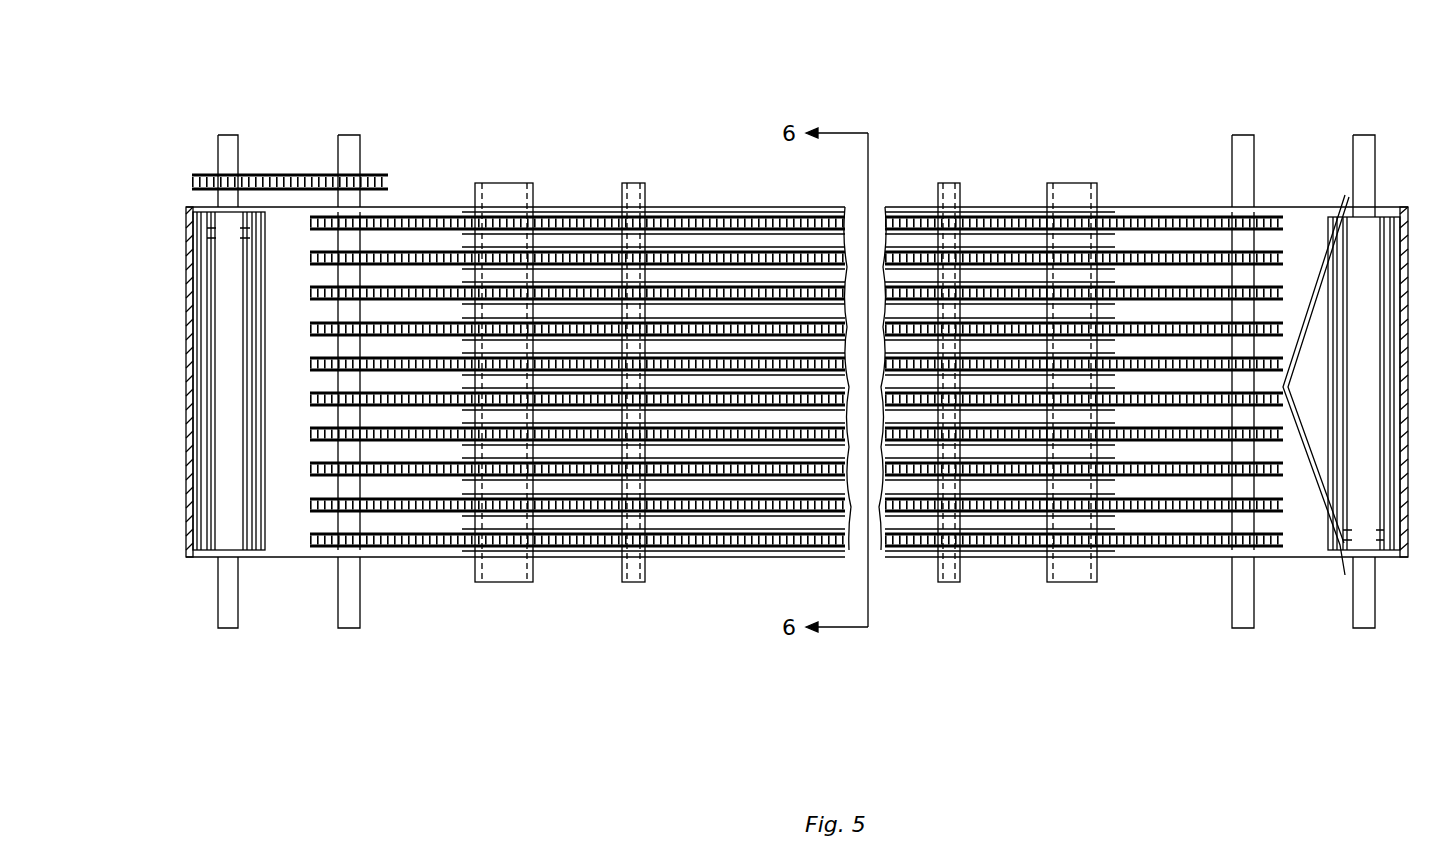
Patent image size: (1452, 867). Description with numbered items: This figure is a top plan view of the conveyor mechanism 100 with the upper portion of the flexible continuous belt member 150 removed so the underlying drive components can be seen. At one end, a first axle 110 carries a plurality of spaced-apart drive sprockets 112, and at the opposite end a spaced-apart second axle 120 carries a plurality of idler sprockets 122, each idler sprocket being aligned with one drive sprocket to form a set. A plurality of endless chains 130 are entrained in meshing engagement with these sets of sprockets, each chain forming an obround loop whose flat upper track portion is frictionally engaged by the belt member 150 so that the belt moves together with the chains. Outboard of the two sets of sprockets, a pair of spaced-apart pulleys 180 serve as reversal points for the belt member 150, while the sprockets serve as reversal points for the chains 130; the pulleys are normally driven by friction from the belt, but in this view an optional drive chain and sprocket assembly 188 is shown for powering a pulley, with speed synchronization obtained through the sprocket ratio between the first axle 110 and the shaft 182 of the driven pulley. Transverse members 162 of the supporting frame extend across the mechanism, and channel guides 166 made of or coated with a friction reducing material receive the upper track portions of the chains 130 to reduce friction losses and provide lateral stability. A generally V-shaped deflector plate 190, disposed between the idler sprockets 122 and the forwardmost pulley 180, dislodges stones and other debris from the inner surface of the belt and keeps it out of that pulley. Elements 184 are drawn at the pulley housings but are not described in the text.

The conveyor mechanism 100 is at (686, 90).
The first axle 110 is at (358, 628).
The drive sprockets 112 is at (310, 540).
The second axle 120 is at (1240, 627).
The idler sprockets 122 is at (1285, 256).
The endless chains 130 is at (1178, 288).
The flexible continuous belt member 150 is at (410, 208).
The transverse members 162 is at (500, 573).
The channel guides 166 is at (460, 244).
The pulleys 180 is at (200, 576).
The shaft 182 is at (240, 630).
The bearing plates 184 is at (268, 343).
The drive chain and sprocket assembly 188 is at (322, 175).
The deflector plate 190 is at (1345, 580).